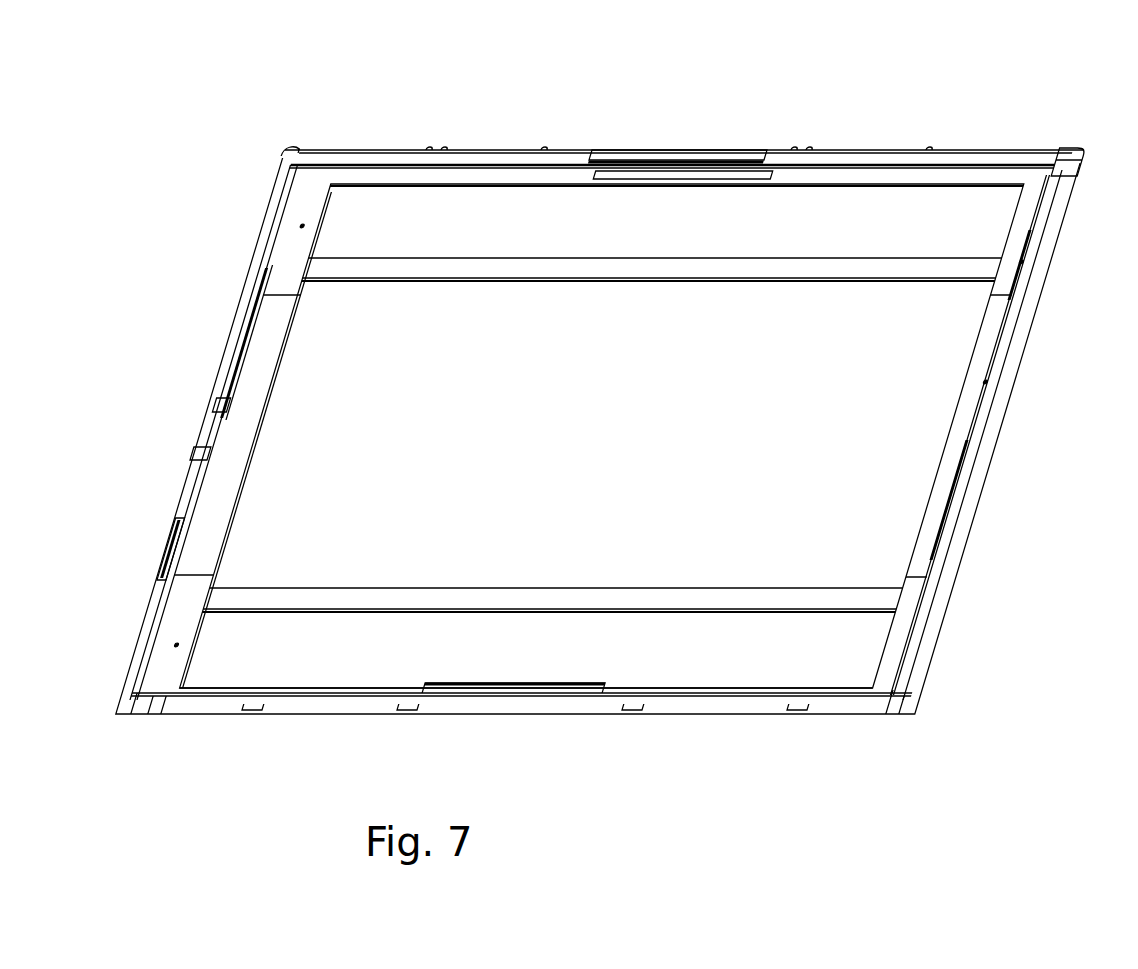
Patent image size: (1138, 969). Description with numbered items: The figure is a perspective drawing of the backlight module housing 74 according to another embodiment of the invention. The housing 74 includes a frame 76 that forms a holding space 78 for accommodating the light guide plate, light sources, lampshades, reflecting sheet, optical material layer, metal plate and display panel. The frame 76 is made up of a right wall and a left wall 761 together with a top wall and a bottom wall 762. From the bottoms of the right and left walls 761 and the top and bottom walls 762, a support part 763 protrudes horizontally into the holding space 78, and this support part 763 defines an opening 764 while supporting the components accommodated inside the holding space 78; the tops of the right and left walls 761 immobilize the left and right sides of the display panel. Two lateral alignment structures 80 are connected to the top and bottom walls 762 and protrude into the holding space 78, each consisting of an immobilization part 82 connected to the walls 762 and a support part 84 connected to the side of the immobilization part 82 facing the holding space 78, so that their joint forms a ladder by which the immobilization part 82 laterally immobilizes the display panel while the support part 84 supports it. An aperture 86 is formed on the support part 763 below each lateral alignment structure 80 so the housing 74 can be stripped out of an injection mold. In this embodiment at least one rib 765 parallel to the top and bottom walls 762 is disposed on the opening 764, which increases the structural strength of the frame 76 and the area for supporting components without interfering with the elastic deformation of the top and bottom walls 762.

The backlight module housing 74 is at (1022, 140).
The frame 76 is at (962, 146).
The holding space 78 is at (878, 411).
The lateral alignment structure 80 is at (594, 424).
The immobilization part 82 is at (636, 152).
The support part 84 is at (605, 72).
The aperture 86 is at (755, 175).
The right and left walls 761 is at (190, 492).
The top and bottom walls 762 is at (478, 148).
The support part 763 is at (172, 612).
The opening 764 is at (808, 665).
The rib 765 is at (985, 265).